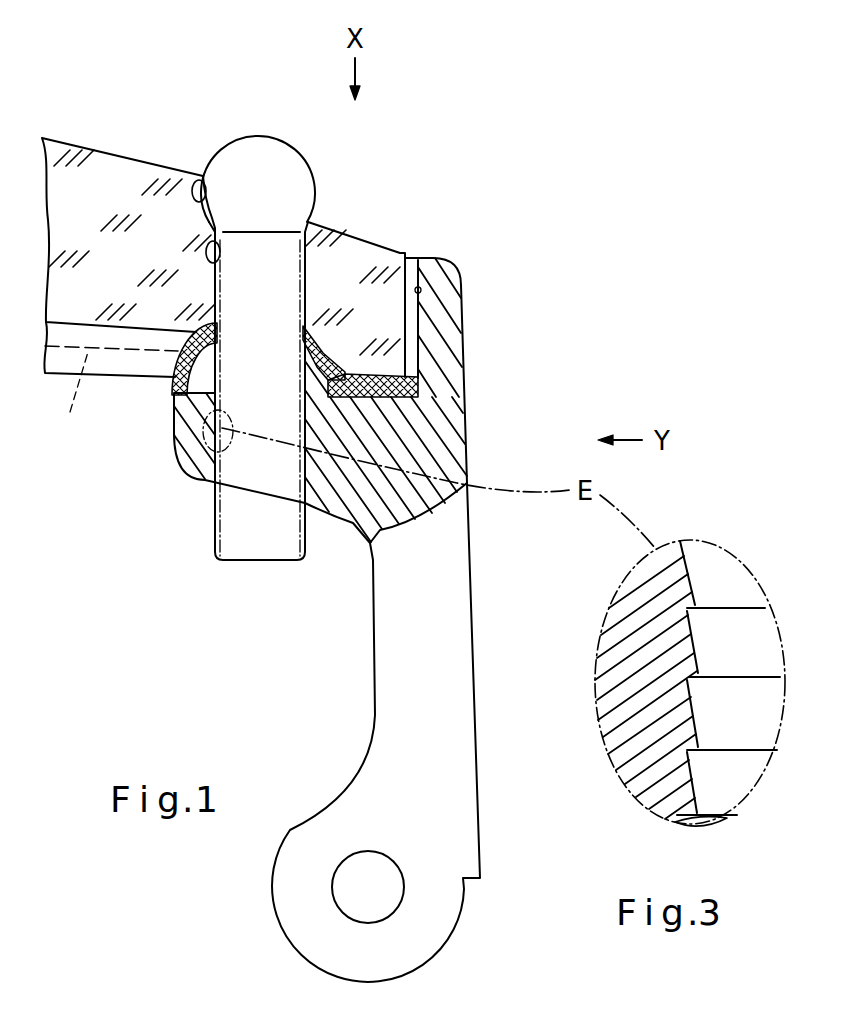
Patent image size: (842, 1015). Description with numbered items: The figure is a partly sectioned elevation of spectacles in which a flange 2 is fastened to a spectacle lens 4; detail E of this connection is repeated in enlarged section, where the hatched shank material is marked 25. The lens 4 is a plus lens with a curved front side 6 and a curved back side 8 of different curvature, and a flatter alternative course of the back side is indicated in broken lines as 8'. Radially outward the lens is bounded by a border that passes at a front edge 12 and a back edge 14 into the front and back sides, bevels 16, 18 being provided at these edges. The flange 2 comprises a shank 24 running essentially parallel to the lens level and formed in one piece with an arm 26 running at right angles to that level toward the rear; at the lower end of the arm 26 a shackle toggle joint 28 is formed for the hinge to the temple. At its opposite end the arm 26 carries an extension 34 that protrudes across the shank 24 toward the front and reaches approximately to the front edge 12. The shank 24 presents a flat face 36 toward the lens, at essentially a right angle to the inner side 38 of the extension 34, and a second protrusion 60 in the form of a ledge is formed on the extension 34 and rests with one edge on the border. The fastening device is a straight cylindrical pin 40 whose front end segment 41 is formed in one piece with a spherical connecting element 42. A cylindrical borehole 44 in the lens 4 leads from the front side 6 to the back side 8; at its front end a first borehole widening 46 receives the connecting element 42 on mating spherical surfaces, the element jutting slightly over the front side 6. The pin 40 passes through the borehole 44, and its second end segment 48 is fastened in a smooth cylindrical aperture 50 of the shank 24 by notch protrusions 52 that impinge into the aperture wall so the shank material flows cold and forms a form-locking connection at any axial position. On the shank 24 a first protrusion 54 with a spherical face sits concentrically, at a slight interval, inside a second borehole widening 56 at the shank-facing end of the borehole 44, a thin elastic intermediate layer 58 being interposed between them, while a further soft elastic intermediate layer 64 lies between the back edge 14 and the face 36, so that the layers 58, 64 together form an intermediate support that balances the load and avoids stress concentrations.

In FIG. 1, the flange 2 is at (488, 613).
In FIG. 1, the spectacle lens 4 is at (72, 305).
In FIG. 1, the front side 6 is at (83, 142).
In FIG. 1, the back side 8 is at (111, 386).
In FIG. 1, the interlayer edge 8' is at (70, 397).
In FIG. 1, the front edge 12 is at (399, 254).
In FIG. 1, the back edge 14 is at (378, 400).
In FIG. 1, the bevel 16 is at (402, 255).
In FIG. 1, the bevel 18 is at (400, 375).
In FIG. 1, the shank 24 is at (213, 465).
In FIG. 3, the nut thread section 25 is at (647, 720).
In FIG. 1, the arm 26 is at (465, 703).
In FIG. 1, the shackle toggle joint 28 is at (455, 925).
In FIG. 1, the extension 34 is at (448, 320).
In FIG. 1, the flat face 36 is at (350, 392).
In FIG. 1, the inner side 38 is at (422, 288).
In FIG. 1, the pin 40 is at (300, 250).
In FIG. 1, the front end segment 41 is at (280, 293).
In FIG. 1, the connecting element 42 is at (300, 163).
In FIG. 1, the borehole 44 is at (202, 258).
In FIG. 1, the first borehole widening 46 is at (195, 197).
In FIG. 1, the second end segment 48 is at (267, 483).
In FIG. 3, the second end segment 48 is at (733, 765).
In FIG. 1, the aperture 50 is at (300, 487).
In FIG. 1, the notch protrusions 52 is at (215, 498).
In FIG. 3, the notch protrusions 52 is at (697, 617).
In FIG. 1, the first protrusion 54 is at (172, 438).
In FIG. 1, the second borehole widening 56 is at (323, 353).
In FIG. 1, the intermediate layer 58 is at (192, 333).
In FIG. 1, the second protrusion 60 is at (440, 259).
In FIG. 1, the intermediate layer 64 is at (373, 392).